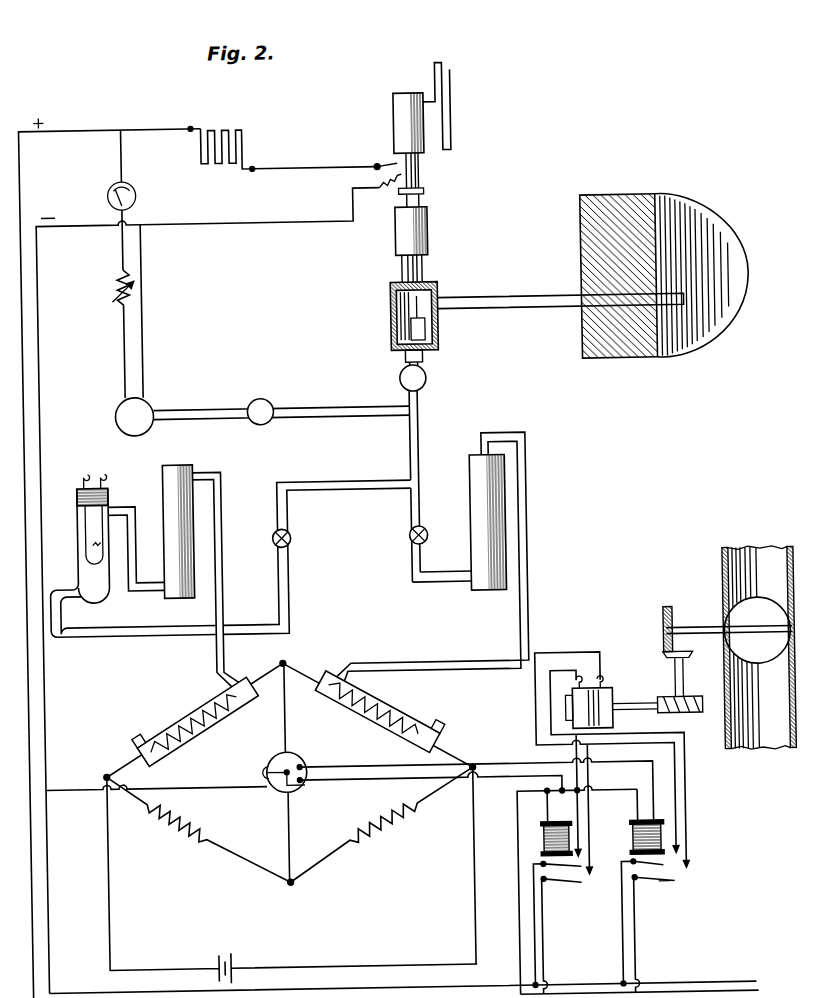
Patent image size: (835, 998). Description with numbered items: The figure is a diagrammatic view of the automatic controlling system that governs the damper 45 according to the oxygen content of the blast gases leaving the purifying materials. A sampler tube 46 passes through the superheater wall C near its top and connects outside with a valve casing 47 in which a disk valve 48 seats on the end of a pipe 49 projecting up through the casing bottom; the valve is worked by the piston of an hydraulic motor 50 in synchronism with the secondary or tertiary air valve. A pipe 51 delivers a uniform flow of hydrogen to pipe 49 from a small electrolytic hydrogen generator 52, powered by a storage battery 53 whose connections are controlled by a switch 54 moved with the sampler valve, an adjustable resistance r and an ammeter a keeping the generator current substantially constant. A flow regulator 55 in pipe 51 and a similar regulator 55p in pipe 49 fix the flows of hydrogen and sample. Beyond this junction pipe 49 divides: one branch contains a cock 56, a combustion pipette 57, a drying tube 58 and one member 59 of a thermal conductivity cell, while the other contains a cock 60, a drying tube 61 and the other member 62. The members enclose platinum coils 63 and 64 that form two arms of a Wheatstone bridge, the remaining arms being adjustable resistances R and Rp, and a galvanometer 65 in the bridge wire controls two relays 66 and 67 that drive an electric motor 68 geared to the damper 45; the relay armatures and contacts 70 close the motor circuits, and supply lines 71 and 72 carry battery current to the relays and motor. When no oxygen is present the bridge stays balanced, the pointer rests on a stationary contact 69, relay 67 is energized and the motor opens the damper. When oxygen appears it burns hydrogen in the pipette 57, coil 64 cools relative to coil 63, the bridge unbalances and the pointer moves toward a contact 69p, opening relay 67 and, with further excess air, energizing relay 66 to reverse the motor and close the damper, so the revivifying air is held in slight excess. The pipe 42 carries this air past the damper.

The pipe 42 is at (747, 556).
The damper 45 is at (745, 616).
The sampler tube 46 is at (505, 298).
The valve casing 47 is at (394, 322).
The disk valve 48 is at (428, 324).
The pipe 49 is at (426, 362).
The hydraulic motor 50 is at (400, 112).
The pipe 51 is at (345, 420).
The electrolytic hydrogen generator 52 is at (122, 424).
The storage battery 53 is at (224, 128).
The switch 54 is at (414, 166).
The flow regulator 55 is at (268, 398).
The flow regulator 55p is at (428, 381).
The cock 56 is at (290, 535).
The combustion pipette 57 is at (109, 595).
The drying tube 58 is at (185, 466).
The member of thermal conductivity cell 59 is at (186, 704).
The cock 60 is at (411, 545).
The drying tube 61 is at (471, 509).
The member of thermal conductivity cell 62 is at (372, 694).
The platinum coil 63 is at (196, 734).
The platinum coil 64 is at (433, 712).
The galvanometer 65 is at (275, 753).
The relay 66 is at (546, 842).
The relay 67 is at (656, 843).
The electric motor 68 is at (606, 703).
The stationary contact 69 is at (300, 763).
The contact 69p is at (302, 783).
The armature 70 is at (660, 888).
The supply line 71 is at (43, 680).
The supply line 72 is at (27, 722).
The ammeter a is at (142, 191).
The adjustable resistance r is at (93, 288).
The adjustable resistance R is at (178, 836).
The adjustable resistance Rp is at (386, 836).
The cylinder C is at (600, 212).